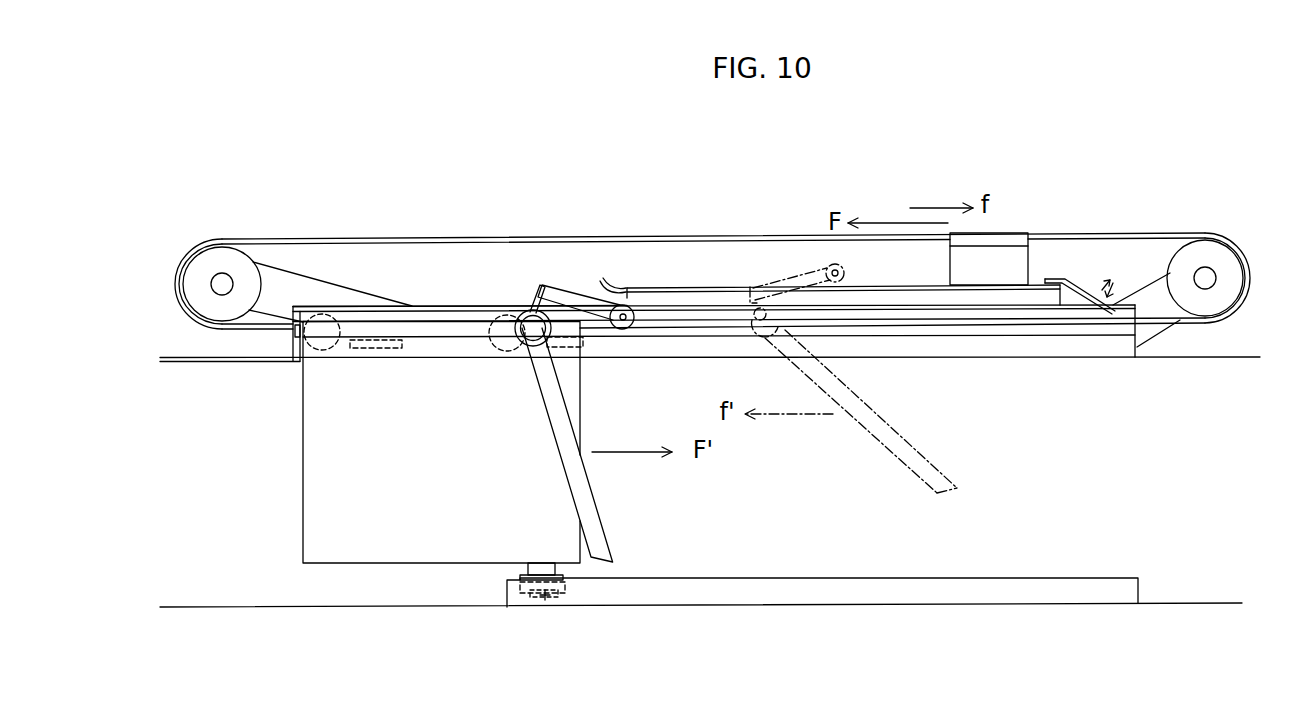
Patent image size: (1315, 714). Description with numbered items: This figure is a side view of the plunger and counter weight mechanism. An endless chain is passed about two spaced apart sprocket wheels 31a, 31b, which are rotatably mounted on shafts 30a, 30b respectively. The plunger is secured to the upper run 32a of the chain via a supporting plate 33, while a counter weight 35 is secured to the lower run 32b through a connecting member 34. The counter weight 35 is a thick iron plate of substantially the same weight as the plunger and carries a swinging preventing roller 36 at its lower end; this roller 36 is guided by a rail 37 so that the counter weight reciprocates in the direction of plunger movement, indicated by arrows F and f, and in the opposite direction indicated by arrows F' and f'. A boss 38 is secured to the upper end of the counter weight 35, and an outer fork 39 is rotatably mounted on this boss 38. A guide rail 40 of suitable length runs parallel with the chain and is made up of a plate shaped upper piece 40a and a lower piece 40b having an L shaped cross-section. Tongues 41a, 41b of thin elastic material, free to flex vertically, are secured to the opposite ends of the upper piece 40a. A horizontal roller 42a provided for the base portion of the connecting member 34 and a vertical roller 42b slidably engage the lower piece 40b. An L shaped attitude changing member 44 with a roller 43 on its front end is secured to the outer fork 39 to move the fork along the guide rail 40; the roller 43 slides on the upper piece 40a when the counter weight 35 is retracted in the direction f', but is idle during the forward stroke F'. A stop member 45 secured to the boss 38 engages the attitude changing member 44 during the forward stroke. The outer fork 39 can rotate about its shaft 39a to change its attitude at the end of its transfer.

The shaft 30a is at (218, 295).
The shaft 30b is at (1216, 280).
The sprocket wheel 31a is at (225, 262).
The sprocket wheel 31b is at (1212, 258).
The upper run of the endless chain 32a is at (650, 240).
The lower run of the endless chain 32b is at (913, 323).
The supporting plate 33 is at (1007, 257).
The connecting member 34 is at (418, 331).
The counter weight 35 is at (305, 510).
The swinging preventing roller 36 is at (552, 600).
The rail 37 is at (1065, 583).
The boss 38 is at (522, 313).
The outer fork 39 is at (597, 535).
The shaft 39a is at (527, 345).
The guide rail 40 is at (894, 284).
The upper piece 40a is at (718, 287).
The lower piece 40b is at (477, 307).
The tongue 41a is at (617, 282).
The tongue 41b is at (1083, 292).
The horizontal roller 42a is at (367, 348).
The vertical roller 42b is at (321, 313).
The roller 43 is at (630, 330).
The attitude changing member 44 is at (530, 311).
The stop member 45 is at (548, 300).